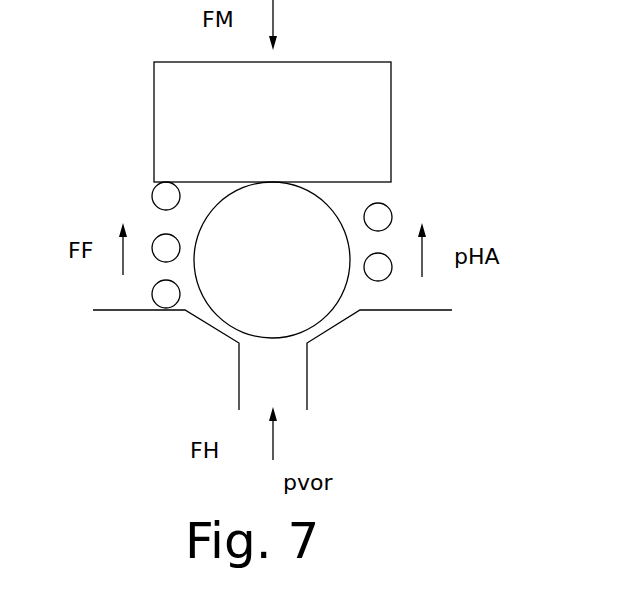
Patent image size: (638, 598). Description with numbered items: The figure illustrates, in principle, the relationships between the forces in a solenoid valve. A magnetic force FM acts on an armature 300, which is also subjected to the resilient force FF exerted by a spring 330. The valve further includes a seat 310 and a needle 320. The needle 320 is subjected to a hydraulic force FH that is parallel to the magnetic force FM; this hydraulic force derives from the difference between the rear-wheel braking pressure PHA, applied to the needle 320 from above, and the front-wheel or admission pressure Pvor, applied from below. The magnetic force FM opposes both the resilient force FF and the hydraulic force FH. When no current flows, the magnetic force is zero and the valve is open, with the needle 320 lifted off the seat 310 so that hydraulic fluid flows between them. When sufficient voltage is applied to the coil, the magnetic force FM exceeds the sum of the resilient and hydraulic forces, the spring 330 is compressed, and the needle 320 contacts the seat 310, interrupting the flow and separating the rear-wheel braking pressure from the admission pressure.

The armature 300 is at (384, 112).
The seat 310 is at (332, 345).
The needle 320 is at (235, 303).
The spring 330 is at (155, 237).